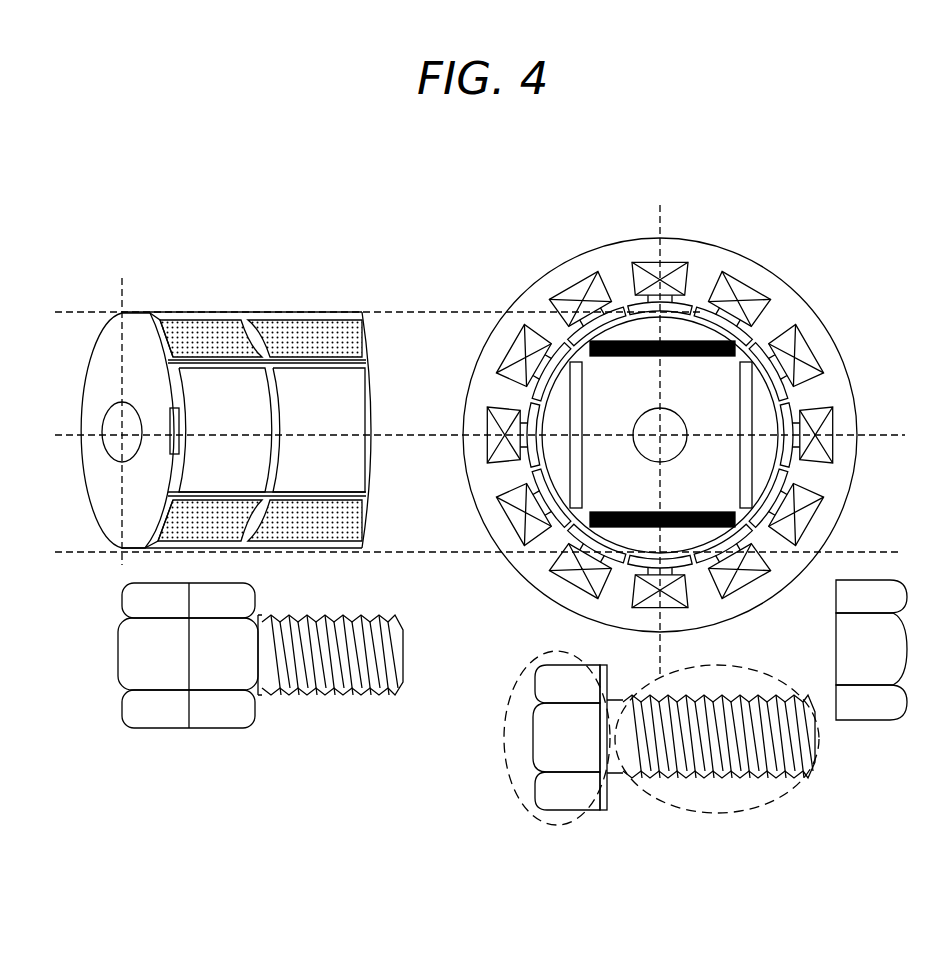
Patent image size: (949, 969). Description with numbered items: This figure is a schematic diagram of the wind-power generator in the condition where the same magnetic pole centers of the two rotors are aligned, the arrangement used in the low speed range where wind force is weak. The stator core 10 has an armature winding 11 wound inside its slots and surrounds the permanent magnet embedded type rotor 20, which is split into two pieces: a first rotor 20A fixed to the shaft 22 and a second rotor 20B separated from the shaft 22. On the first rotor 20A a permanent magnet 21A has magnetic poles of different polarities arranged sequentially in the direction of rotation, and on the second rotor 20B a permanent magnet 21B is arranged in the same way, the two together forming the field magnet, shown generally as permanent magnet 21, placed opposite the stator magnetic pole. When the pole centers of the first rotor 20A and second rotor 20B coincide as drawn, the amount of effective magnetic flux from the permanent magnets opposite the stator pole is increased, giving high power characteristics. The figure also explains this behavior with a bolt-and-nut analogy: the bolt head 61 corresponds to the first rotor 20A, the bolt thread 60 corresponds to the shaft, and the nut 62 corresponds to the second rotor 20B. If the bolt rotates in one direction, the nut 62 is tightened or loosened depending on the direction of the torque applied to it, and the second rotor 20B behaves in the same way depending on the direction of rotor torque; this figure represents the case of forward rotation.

The stator core 10 is at (695, 237).
The armature winding 11 is at (739, 302).
The permanent magnet embedded type rotor 20 is at (752, 338).
The first rotor 20A is at (143, 316).
The second rotor 20B is at (357, 330).
The permanent magnet 21 is at (742, 390).
The permanent magnet 21A is at (215, 392).
The permanent magnet 21B is at (277, 392).
The shaft 22 is at (640, 418).
The bolt thread 60 is at (390, 670).
The bolt head 61 is at (135, 662).
The nut 62 is at (888, 592).